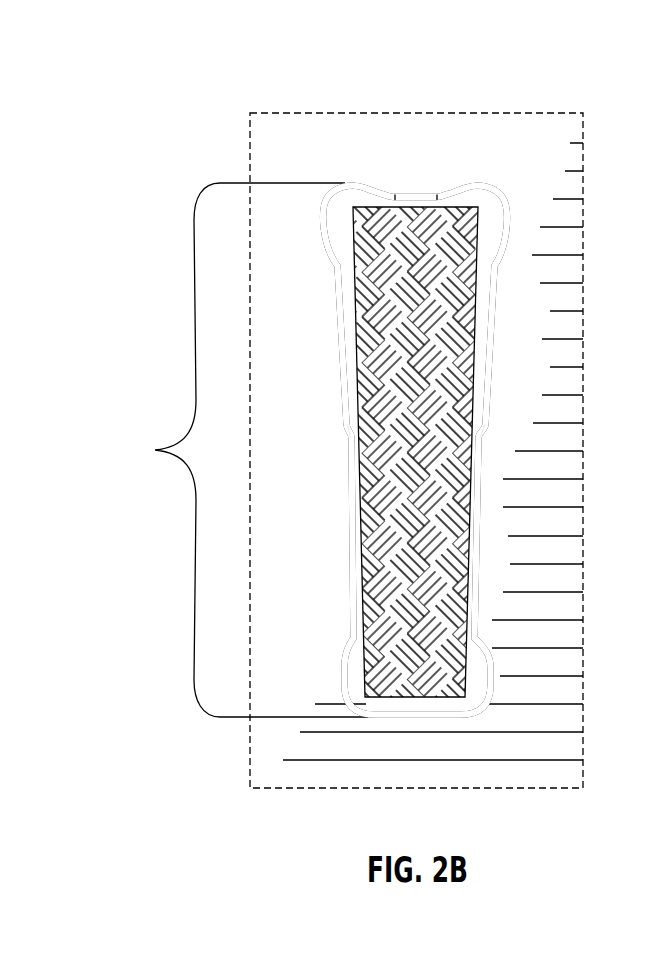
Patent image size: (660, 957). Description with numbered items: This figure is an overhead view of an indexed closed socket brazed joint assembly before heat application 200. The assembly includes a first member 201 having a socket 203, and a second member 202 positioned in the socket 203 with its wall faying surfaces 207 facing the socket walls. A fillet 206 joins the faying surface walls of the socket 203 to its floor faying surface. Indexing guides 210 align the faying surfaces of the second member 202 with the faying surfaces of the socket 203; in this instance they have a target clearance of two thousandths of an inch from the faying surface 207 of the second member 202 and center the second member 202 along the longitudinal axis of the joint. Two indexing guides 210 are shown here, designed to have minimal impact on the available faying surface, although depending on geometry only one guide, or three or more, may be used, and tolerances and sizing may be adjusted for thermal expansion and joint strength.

The indexed closed socket brazed joint assembly before heat application 200 is at (526, 60).
The first member 201 is at (262, 125).
The second member 202 is at (465, 210).
The socket 203 is at (155, 450).
The fillet 206 is at (493, 300).
The wall faying surfaces 207 is at (407, 205).
The indexing guides 210 is at (345, 432).